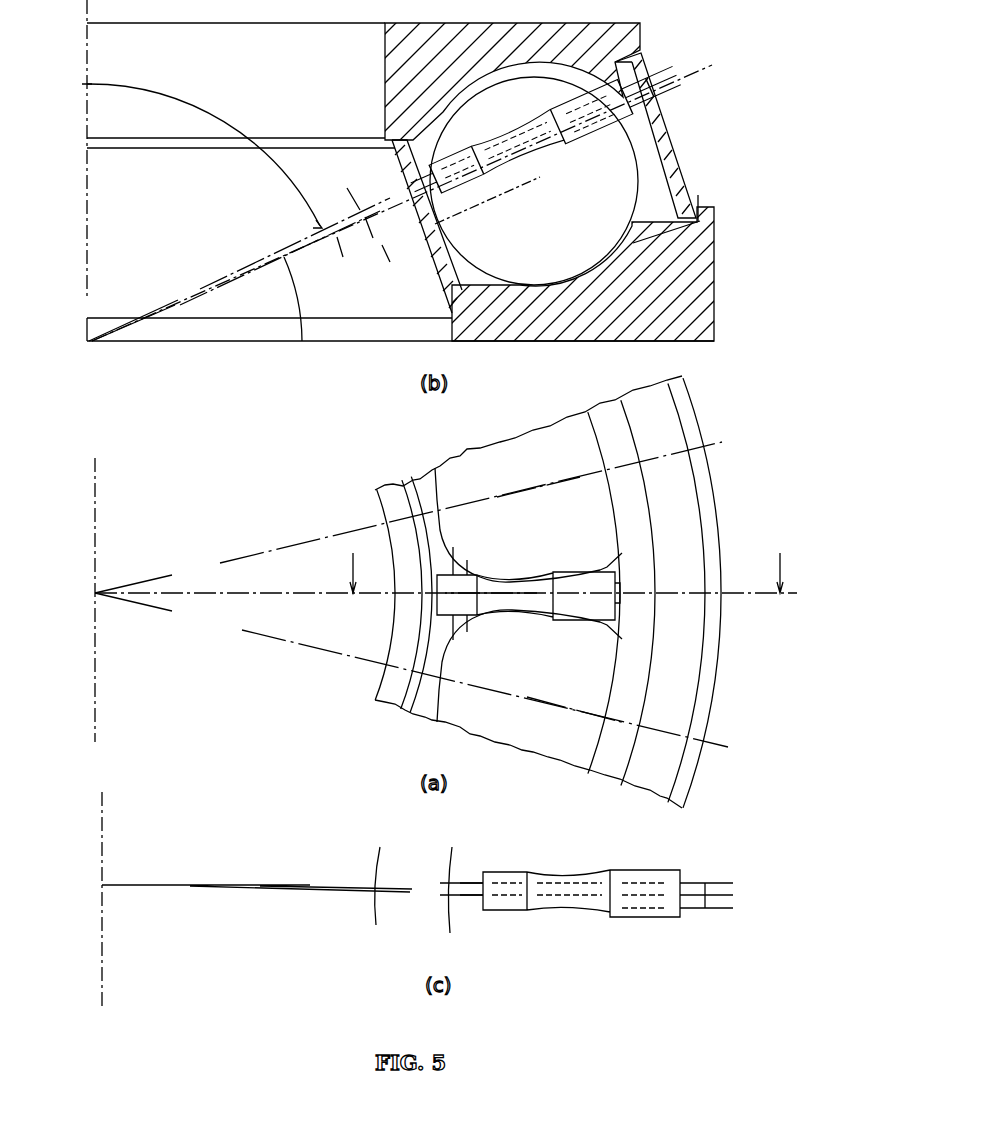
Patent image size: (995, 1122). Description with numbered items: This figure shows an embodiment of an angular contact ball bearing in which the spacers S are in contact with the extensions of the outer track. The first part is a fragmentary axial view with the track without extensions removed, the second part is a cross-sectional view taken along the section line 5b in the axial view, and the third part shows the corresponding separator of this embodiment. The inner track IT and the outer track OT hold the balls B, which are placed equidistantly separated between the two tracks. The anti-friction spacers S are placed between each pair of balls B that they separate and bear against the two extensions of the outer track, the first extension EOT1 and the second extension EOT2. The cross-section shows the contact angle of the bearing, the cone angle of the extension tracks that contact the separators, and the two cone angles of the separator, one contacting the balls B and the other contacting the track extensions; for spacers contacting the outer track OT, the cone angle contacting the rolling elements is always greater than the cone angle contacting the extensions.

The internal track IT is at (241, 85).
The outer track OT is at (772, 672).
The extension of outer track 1 EOT1 is at (683, 155).
The extension of outer track 2 EOT2 is at (433, 281).
The balls B is at (534, 425).
The spacers S is at (569, 487).
The section line 5(b)-5(b) 5b is at (567, 573).